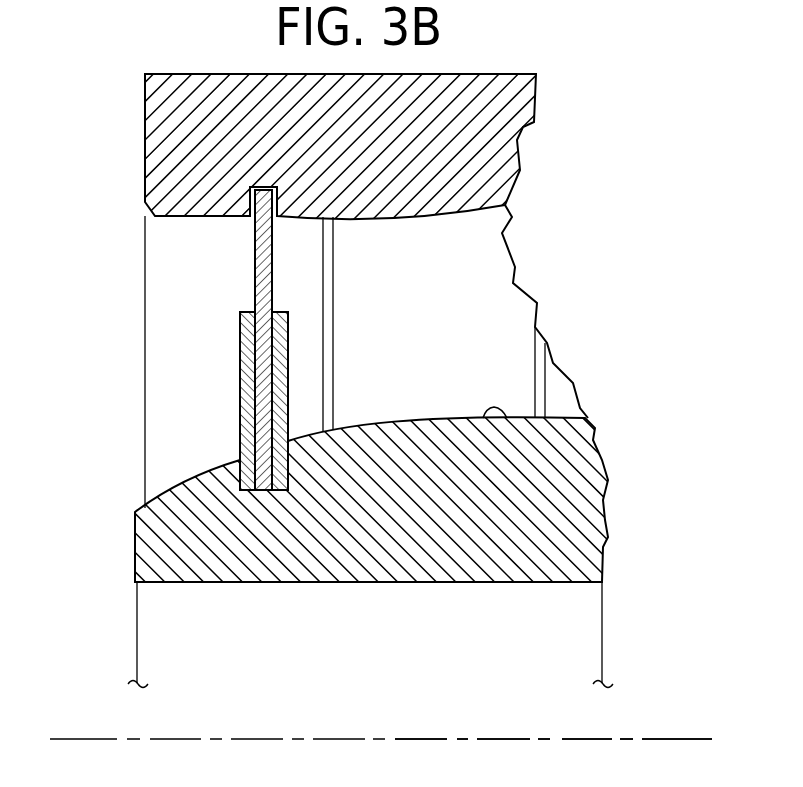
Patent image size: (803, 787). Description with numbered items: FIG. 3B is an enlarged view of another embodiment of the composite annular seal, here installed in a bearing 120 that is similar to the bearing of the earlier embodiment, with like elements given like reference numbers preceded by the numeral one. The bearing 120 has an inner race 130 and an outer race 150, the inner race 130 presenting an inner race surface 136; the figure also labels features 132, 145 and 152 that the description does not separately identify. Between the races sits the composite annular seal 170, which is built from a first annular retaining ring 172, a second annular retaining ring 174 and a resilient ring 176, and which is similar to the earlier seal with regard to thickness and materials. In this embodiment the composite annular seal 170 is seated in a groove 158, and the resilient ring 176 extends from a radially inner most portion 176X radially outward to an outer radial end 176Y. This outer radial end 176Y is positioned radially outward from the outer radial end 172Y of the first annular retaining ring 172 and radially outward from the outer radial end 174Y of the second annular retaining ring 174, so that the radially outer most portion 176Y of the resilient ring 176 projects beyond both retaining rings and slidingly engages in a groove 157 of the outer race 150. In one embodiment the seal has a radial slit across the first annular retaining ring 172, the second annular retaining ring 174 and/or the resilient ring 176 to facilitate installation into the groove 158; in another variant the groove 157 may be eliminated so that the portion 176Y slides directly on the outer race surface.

The bearing 120 is at (584, 78).
The inner race 130 is at (577, 477).
The axis 132 is at (275, 740).
The inner race surface 136 is at (492, 408).
The cavity 145 is at (493, 297).
The outer race 150 is at (500, 140).
The axis 152 is at (388, 740).
The groove 157 is at (260, 178).
The groove 158 is at (263, 500).
The composite annular seal 170 is at (242, 414).
The first annular retaining ring 172 is at (163, 399).
The outer radial end of the first annular retaining ring 172Y is at (240, 310).
The second annular retaining ring 174 is at (342, 380).
The outer radial end of the second annular retaining ring 174Y is at (272, 312).
The resilient ring 176 is at (208, 414).
The radially inner most portion of the resilient ring 176X is at (267, 492).
The outer radial end of the resilient ring 176Y is at (262, 184).